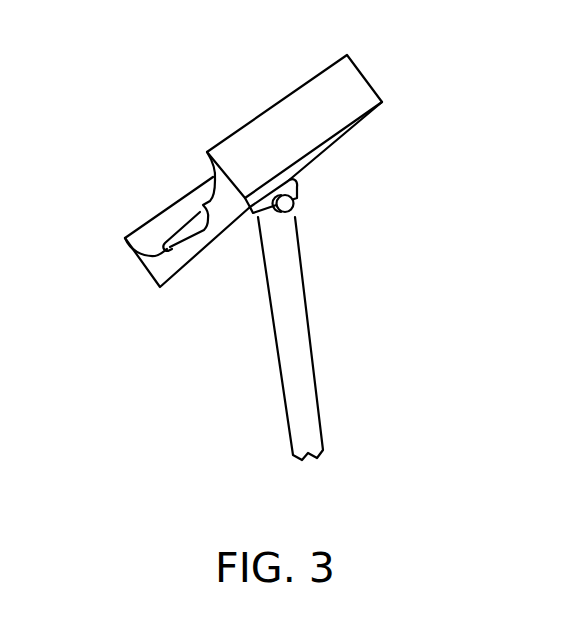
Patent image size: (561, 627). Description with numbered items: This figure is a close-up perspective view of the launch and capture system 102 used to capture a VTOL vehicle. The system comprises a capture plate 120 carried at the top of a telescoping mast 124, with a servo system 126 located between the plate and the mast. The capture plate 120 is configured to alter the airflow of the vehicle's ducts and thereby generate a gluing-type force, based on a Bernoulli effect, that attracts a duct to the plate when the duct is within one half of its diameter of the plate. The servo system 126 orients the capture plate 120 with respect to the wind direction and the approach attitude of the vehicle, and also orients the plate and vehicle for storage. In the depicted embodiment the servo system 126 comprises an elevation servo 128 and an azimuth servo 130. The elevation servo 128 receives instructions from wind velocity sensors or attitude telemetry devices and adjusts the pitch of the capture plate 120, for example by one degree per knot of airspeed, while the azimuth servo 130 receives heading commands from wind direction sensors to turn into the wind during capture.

The launch and capture system 102 is at (273, 282).
The capture plate 120 is at (280, 112).
The telescoping mast 124 is at (315, 338).
The servo system 126 is at (356, 212).
The elevation servo 128 is at (328, 221).
The azimuth servo 130 is at (293, 191).